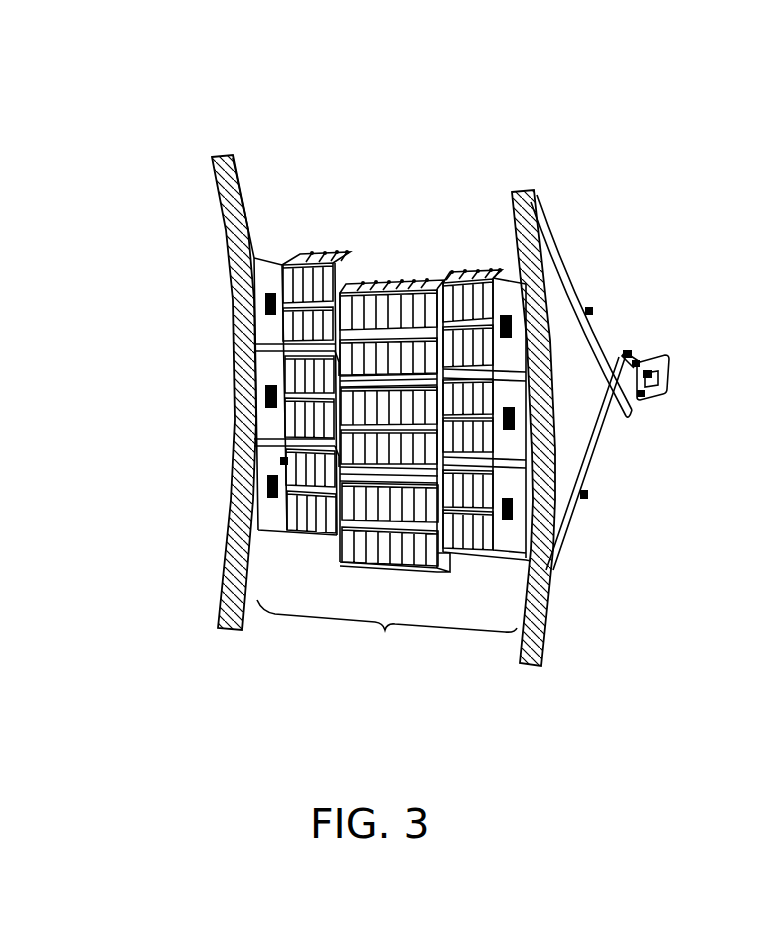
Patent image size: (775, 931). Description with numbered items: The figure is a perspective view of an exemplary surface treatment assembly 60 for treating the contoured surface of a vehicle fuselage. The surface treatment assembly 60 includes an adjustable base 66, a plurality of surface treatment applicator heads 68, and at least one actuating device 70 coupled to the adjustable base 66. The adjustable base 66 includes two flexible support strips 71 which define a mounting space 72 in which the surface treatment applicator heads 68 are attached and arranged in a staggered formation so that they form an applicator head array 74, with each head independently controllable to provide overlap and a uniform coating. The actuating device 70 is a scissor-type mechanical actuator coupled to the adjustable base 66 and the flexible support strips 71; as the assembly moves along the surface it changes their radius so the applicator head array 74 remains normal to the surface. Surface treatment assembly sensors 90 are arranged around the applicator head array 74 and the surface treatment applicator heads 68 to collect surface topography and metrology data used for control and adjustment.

The surface treatment assembly 60 is at (424, 354).
The adjustable base 66 is at (225, 590).
The surface treatment applicator heads 68 is at (276, 270).
The actuating device 70 is at (668, 370).
The flexible support strips 71 is at (213, 161).
The mounting space 72 is at (392, 337).
The applicator head array 74 is at (387, 628).
The surface treatment assembly sensor 90 is at (267, 485).